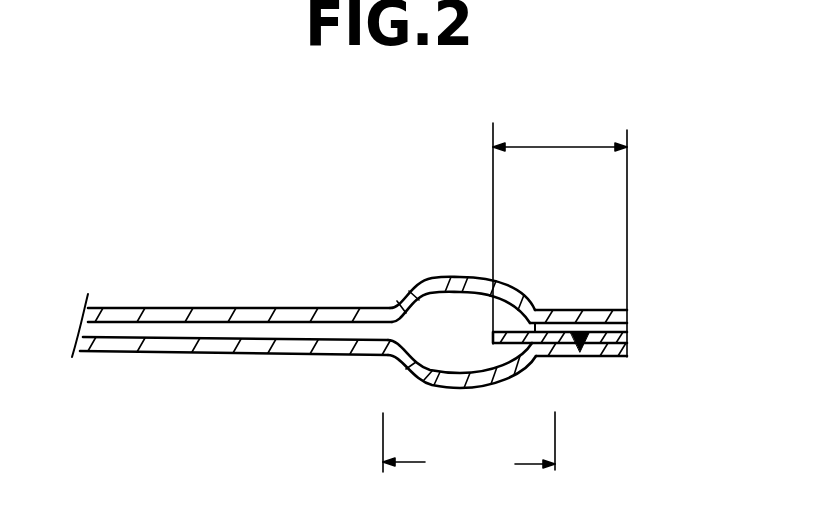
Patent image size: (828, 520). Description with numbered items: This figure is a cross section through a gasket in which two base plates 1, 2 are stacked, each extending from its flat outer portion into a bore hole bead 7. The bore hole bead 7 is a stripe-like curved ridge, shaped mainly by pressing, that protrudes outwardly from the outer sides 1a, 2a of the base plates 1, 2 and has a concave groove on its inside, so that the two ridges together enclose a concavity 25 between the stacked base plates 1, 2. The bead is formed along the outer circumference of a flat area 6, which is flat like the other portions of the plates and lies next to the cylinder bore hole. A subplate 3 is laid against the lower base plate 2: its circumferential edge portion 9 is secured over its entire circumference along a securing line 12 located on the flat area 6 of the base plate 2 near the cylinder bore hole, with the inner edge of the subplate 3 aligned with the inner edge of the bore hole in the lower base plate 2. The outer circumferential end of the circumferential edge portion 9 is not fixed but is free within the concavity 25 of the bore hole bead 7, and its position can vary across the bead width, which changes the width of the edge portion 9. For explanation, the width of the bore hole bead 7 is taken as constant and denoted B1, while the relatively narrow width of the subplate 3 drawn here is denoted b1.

The base plate 1 is at (384, 292).
The outer side of base plate 1a is at (258, 308).
The base plate 2 is at (390, 391).
The outer side of base plate 2a is at (250, 355).
The subplate 3 is at (628, 340).
The flat area 6 is at (567, 312).
The bore hole bead 7 is at (440, 278).
The circumferential edge portion 9 is at (538, 312).
The securing line 12 is at (583, 333).
The concavity 25 is at (430, 313).
The width of narrow subplate b1 is at (560, 233).
The width of bore hole bead B1 is at (469, 449).